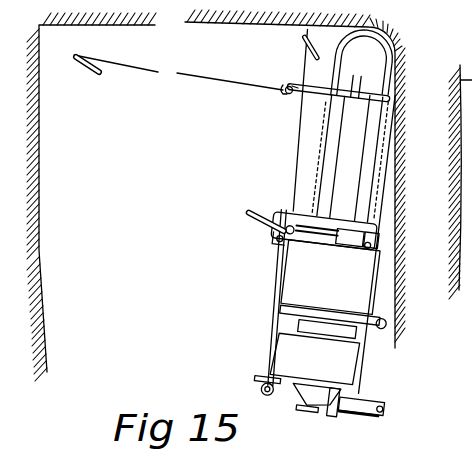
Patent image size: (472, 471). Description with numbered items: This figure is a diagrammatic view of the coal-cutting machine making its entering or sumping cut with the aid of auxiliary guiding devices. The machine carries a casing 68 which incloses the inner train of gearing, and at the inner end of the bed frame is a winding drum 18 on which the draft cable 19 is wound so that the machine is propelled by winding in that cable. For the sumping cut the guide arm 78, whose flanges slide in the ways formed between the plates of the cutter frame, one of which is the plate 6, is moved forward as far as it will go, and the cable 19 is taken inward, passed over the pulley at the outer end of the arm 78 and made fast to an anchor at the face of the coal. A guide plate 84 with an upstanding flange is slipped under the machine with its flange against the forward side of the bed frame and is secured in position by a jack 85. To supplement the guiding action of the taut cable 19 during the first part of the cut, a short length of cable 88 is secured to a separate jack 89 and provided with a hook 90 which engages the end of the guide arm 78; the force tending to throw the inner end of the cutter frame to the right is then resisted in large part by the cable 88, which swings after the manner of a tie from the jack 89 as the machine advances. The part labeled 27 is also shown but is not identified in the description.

The plate 6 is at (360, 148).
The winding drum 18 is at (325, 232).
The draft cable 19 is at (300, 130).
The motor casing 27 is at (328, 346).
The casing 68 is at (330, 277).
The arm 78 is at (368, 95).
The guide plate 84 is at (279, 245).
The jack 85 is at (259, 228).
The short length of cable 88 is at (215, 82).
The jack 89 is at (94, 76).
The hook 90 is at (287, 85).